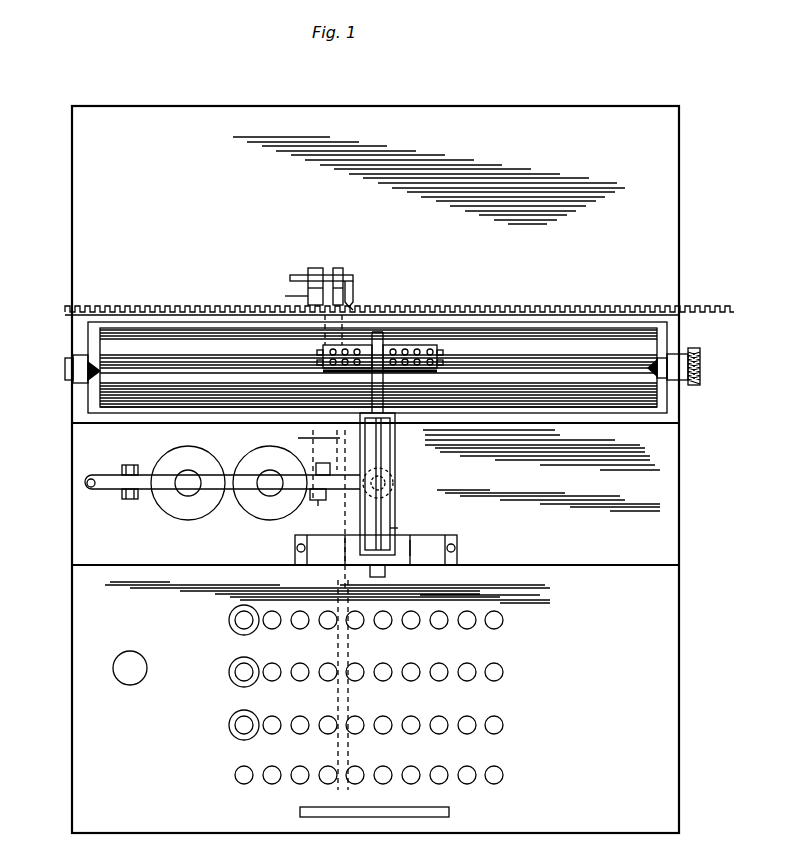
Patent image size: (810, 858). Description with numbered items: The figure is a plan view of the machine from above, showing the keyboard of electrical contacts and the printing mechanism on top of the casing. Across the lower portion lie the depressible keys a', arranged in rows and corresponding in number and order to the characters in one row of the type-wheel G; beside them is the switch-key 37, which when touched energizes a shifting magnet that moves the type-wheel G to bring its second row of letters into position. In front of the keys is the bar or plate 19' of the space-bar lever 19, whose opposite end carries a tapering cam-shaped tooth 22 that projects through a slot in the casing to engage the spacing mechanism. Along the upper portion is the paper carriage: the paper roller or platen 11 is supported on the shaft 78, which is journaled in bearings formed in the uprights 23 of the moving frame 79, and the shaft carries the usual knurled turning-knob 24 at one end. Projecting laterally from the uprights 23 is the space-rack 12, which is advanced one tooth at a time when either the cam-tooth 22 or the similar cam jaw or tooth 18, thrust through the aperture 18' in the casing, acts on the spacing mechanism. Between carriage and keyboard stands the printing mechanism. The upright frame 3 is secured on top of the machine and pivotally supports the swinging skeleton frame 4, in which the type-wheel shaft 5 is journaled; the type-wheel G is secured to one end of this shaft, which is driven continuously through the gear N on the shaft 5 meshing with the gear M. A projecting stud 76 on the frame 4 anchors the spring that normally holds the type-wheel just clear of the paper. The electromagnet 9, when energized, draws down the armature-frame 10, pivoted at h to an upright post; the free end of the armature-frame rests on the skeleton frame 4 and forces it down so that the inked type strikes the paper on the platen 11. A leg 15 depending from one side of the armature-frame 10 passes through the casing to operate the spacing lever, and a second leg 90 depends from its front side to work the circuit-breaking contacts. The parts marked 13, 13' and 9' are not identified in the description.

The space-rack 12 is at (403, 310).
The moving frame 79 is at (667, 411).
The paper roller or platen 11 is at (517, 345).
The type-wheel G is at (432, 340).
The stop bar 13 is at (321, 264).
The tapering cam jaw or tooth 18 is at (332, 274).
The tapering cam-shaped tooth 22 is at (340, 297).
The aperture 18' is at (283, 296).
The stop arm tip 13' is at (370, 297).
The shaft 78 is at (70, 372).
The uprights 23 is at (80, 380).
The knurled turning-knob 24 is at (700, 382).
The type-wheel shaft 5 is at (381, 448).
The gear M is at (392, 473).
The gear N is at (392, 500).
The swinging skeleton frame 4 is at (396, 531).
The armature-frame 10 is at (228, 477).
The pivot h is at (126, 470).
The electromagnet 9 is at (228, 496).
The space-bar lever 19 is at (307, 437).
The leg 15 is at (321, 481).
The leg 90 is at (318, 500).
The upright frame 3 is at (457, 550).
The block divider 9' is at (442, 528).
The projecting stud 76 is at (387, 574).
The switch-key 37 is at (128, 666).
The depressible keys a' is at (380, 694).
The bar or plate 19' is at (396, 814).